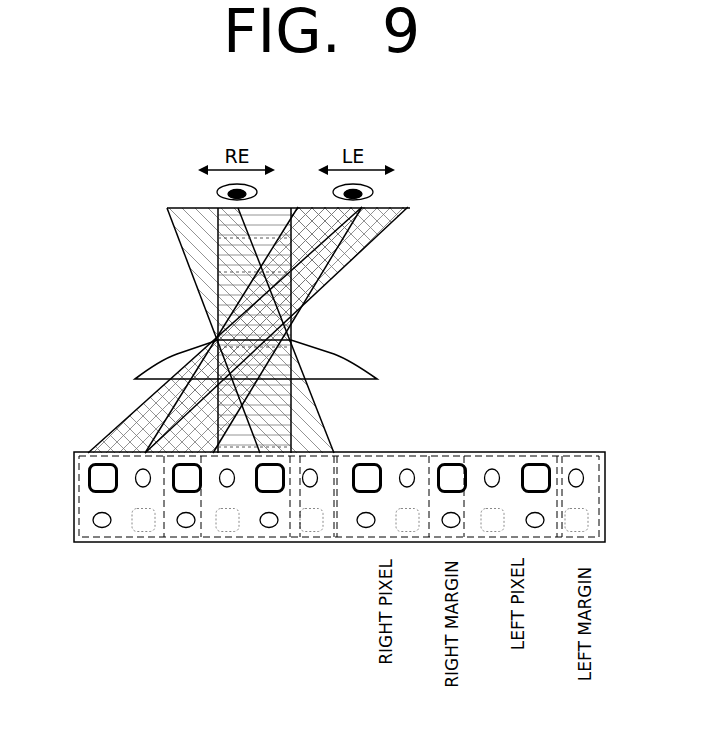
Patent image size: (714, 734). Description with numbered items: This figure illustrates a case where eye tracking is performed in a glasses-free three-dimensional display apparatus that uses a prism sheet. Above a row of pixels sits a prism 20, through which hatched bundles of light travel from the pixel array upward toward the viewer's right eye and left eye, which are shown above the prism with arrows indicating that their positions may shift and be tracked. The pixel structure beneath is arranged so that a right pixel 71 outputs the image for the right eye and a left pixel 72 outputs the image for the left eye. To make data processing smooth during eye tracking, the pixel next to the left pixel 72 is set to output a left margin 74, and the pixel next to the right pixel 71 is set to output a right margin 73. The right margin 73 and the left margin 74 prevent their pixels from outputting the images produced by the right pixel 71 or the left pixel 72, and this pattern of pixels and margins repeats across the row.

The prism 20 is at (366, 342).
The right pixel 71 is at (92, 543).
The left pixel 72 is at (232, 547).
The right margin 73 is at (167, 547).
The left margin 74 is at (298, 547).